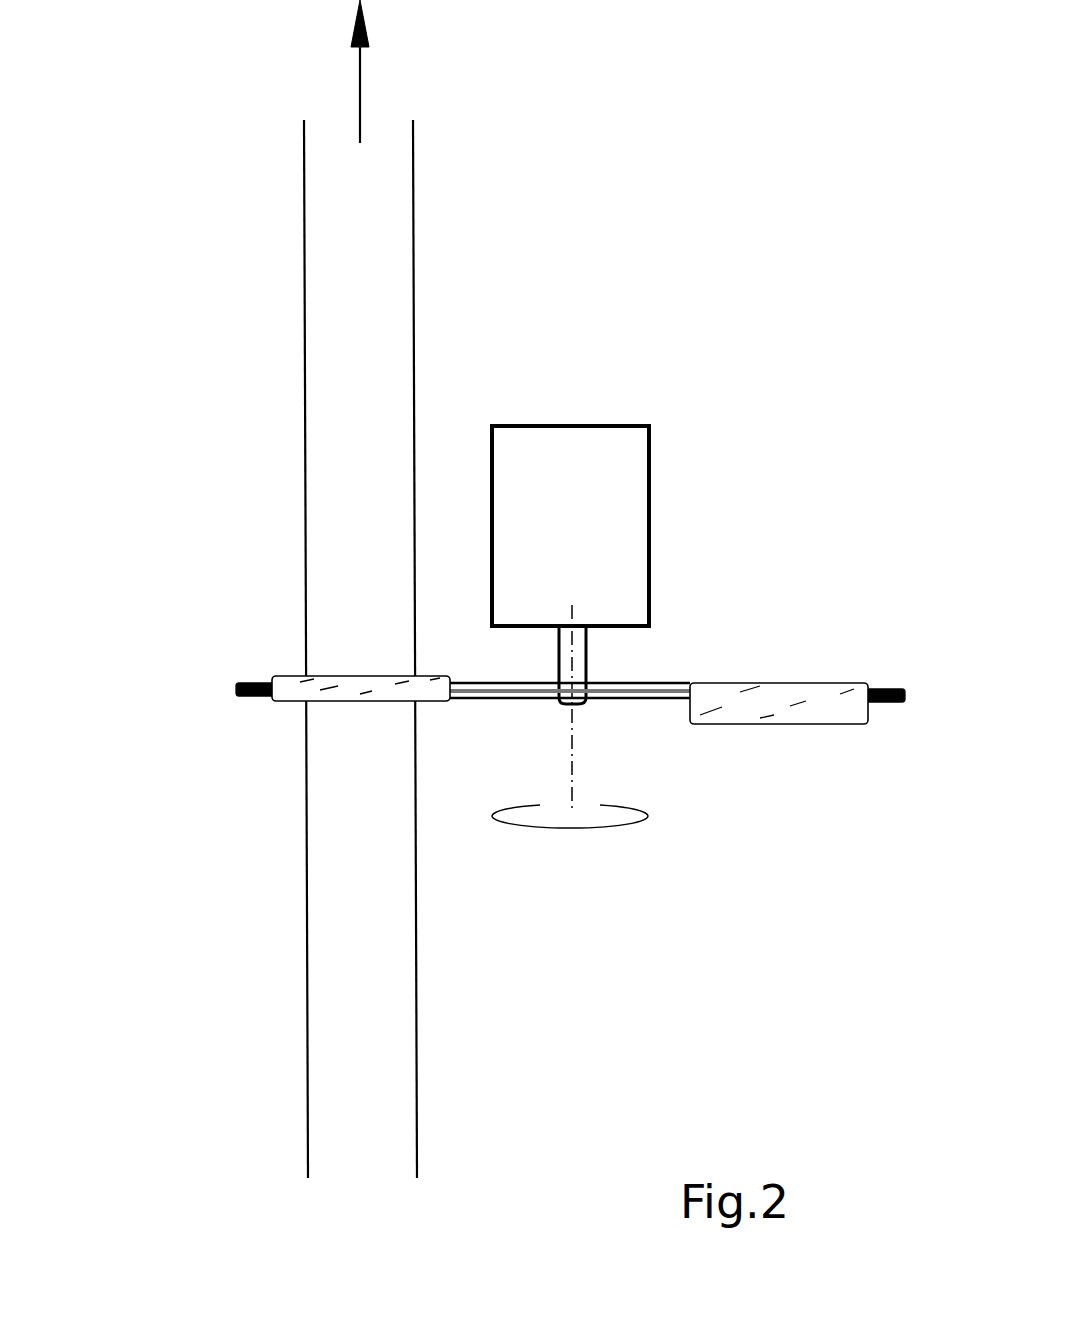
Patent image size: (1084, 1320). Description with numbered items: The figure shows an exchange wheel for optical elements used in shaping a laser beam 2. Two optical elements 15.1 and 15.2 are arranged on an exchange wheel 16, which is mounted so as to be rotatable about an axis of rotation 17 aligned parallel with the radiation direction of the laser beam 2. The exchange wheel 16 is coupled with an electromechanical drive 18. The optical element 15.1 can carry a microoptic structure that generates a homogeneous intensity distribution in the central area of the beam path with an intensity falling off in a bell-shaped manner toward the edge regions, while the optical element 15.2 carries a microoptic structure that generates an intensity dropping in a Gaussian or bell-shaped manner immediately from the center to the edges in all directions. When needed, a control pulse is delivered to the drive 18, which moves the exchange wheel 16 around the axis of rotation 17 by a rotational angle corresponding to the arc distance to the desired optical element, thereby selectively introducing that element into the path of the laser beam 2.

The laser beam 2 is at (326, 314).
The optical element 15.1 is at (295, 677).
The optical element 15.2 is at (805, 690).
The exchange wheel 16 is at (252, 695).
The axis of rotation 17 is at (573, 752).
The electromechanical drive 18 is at (610, 440).